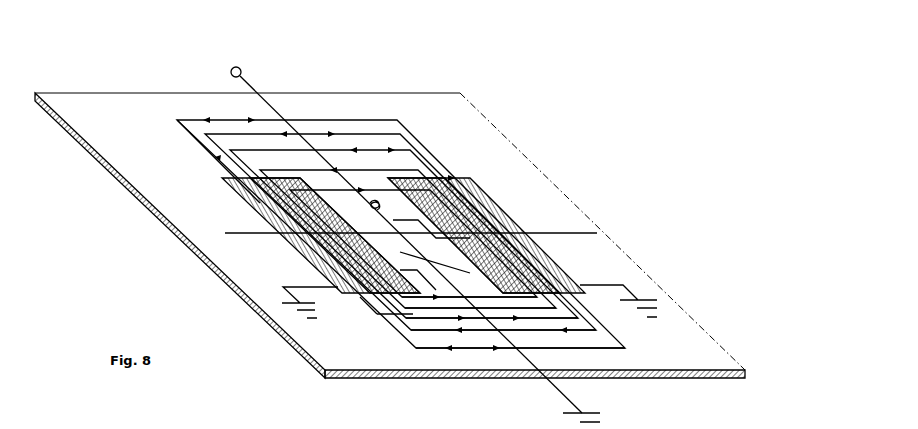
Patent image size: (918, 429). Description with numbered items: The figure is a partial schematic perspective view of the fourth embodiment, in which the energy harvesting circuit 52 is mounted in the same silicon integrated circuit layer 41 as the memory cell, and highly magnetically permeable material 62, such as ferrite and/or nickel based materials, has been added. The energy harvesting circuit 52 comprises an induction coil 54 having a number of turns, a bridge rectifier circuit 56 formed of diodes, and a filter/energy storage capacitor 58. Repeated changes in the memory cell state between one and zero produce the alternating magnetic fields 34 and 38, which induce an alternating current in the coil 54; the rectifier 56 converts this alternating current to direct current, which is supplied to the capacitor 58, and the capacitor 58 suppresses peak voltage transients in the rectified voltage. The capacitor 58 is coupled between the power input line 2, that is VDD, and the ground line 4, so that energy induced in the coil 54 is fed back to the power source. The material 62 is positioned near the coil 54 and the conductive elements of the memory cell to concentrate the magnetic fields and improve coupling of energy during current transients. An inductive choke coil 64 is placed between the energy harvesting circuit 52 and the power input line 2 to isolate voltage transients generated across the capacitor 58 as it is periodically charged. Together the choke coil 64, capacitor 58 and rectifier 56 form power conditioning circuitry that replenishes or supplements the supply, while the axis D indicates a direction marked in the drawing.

The power input line 2 is at (230, 73).
The ground line 4 is at (553, 394).
The magnetic field 34 is at (320, 285).
The magnetic field 38 is at (462, 178).
The silicon integrated circuit layer 41 is at (110, 95).
The energy harvesting circuit 52 is at (177, 118).
The induction coil 54 is at (363, 132).
The bridge rectifier circuit 56 is at (542, 320).
The filter/energy storage capacitor 58 is at (397, 232).
The highly magnetically permeable material 62 is at (238, 188).
The inductive choke coil 64 is at (370, 204).
The axis D is at (401, 233).